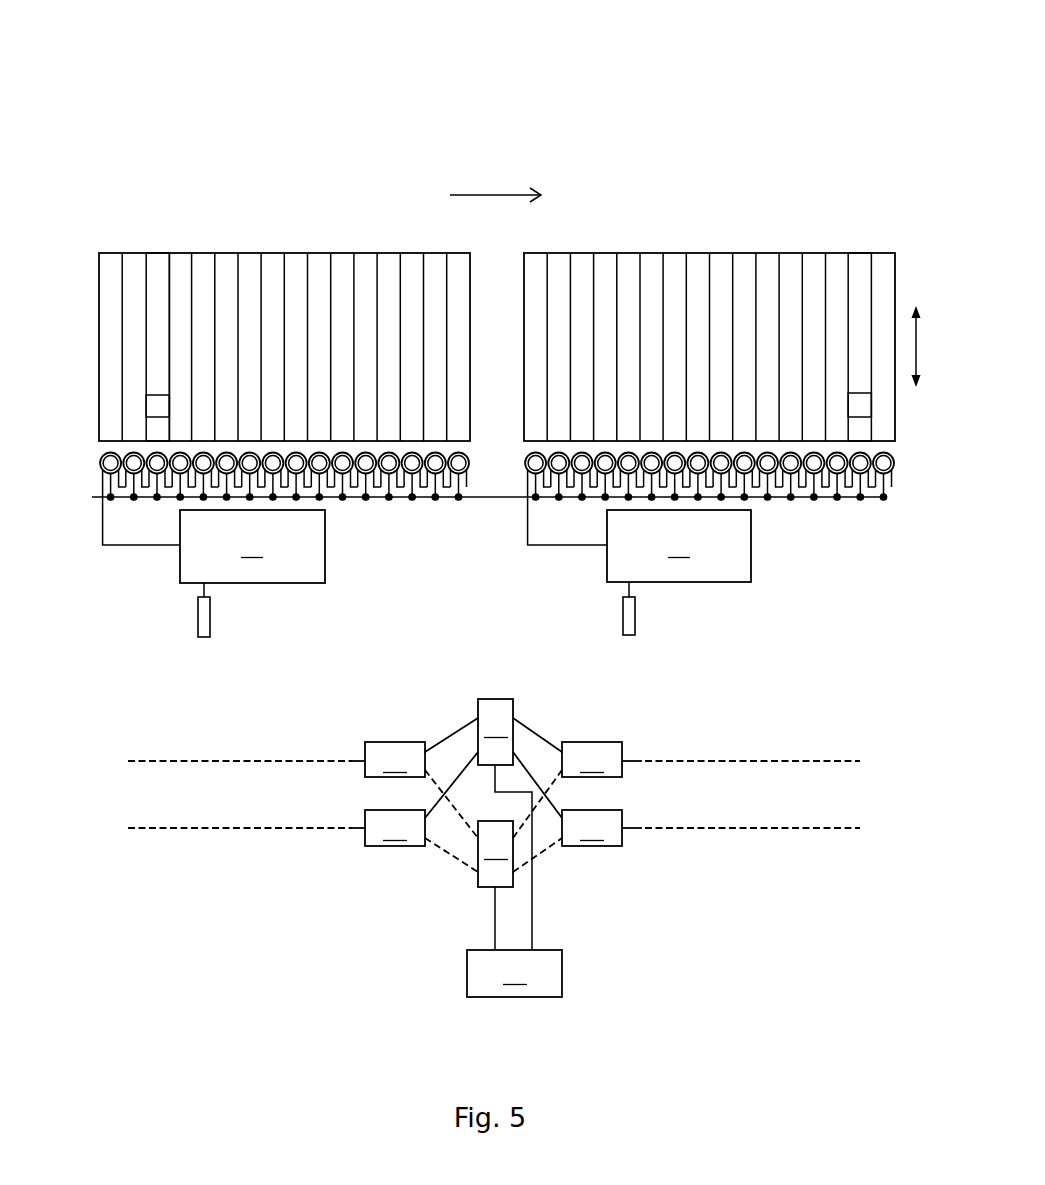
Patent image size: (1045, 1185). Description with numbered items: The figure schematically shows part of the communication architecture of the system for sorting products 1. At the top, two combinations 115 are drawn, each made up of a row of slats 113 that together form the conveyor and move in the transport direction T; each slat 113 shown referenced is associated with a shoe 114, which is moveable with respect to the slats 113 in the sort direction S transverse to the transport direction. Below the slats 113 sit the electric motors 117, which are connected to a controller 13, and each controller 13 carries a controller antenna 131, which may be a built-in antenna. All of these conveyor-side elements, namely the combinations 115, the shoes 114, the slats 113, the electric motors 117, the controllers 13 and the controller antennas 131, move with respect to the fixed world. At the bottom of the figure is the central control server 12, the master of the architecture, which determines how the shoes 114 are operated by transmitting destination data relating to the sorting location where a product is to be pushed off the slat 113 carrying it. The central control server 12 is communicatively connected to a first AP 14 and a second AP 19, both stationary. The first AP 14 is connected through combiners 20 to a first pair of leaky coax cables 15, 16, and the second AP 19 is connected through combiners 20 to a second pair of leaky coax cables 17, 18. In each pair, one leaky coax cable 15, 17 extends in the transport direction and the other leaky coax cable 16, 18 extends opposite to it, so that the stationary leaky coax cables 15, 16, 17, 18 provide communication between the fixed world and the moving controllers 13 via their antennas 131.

The system for sorting products 1 is at (392, 60).
The combination 115 is at (143, 168).
The slat 113 is at (160, 261).
The shoe 114 is at (155, 405).
The electric motor 117 is at (153, 472).
The controller 13 is at (427, 535).
The controller antenna 131 is at (206, 612).
The leaky coax cable 18 is at (236, 761).
The leaky coax cable 16 is at (243, 830).
The leaky coax cable 17 is at (752, 760).
The leaky coax cable 15 is at (752, 830).
The combiner 20 is at (493, 794).
The second AP 19 is at (493, 824).
The first AP 14 is at (493, 860).
The central control server 12 is at (514, 973).